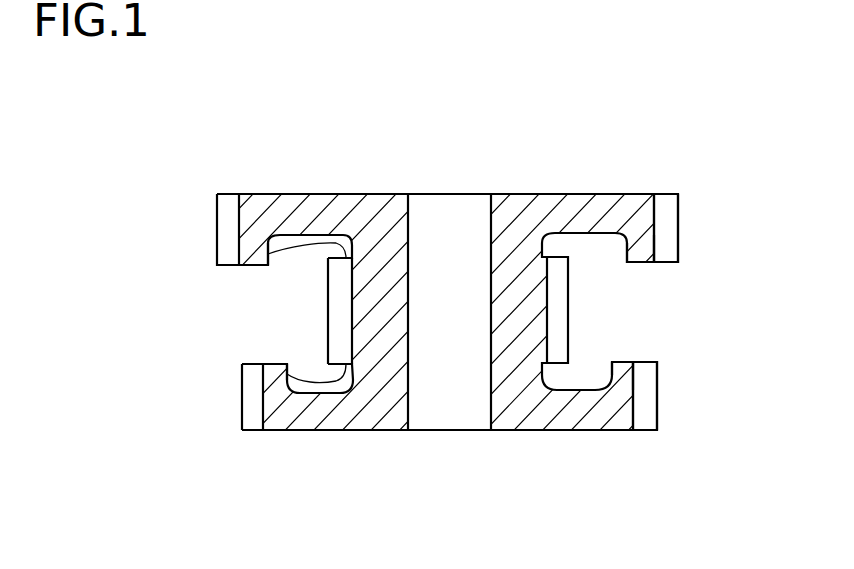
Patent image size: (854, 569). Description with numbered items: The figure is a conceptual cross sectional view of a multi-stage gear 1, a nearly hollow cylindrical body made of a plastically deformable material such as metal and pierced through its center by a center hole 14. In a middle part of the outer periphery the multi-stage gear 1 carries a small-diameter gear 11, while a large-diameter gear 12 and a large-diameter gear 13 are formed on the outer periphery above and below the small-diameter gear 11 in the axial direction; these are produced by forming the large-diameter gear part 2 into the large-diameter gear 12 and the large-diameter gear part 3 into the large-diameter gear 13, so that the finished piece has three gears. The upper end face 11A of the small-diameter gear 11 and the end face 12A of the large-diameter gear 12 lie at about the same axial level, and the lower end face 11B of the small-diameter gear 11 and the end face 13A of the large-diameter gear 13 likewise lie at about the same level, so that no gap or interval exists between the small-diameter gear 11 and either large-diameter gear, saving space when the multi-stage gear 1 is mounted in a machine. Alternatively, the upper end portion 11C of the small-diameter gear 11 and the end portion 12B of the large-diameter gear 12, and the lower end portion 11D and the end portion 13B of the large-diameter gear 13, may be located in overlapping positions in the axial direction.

The multi-stage gear 1 is at (427, 294).
The large-diameter gear part 2 is at (427, 313).
The large-diameter gear part 3 is at (578, 420).
The small-diameter gear 11 is at (244, 314).
The upper end face of the small-diameter gear 11A is at (268, 247).
The lower end face of the small-diameter gear 11B is at (300, 382).
The upper end portion of the small-diameter gear 11C is at (337, 273).
The lower end portion of the small-diameter gear 11D is at (330, 350).
The large-diameter gear 12 is at (670, 213).
The end face of the large-diameter gear 12A is at (639, 264).
The end portion of the large-diameter gear 12B is at (640, 250).
The large-diameter gear 13 is at (650, 398).
The end face of the large-diameter gear 13A is at (626, 361).
The end portion of the large-diameter gear 13B is at (620, 372).
The center hole 14 is at (455, 418).